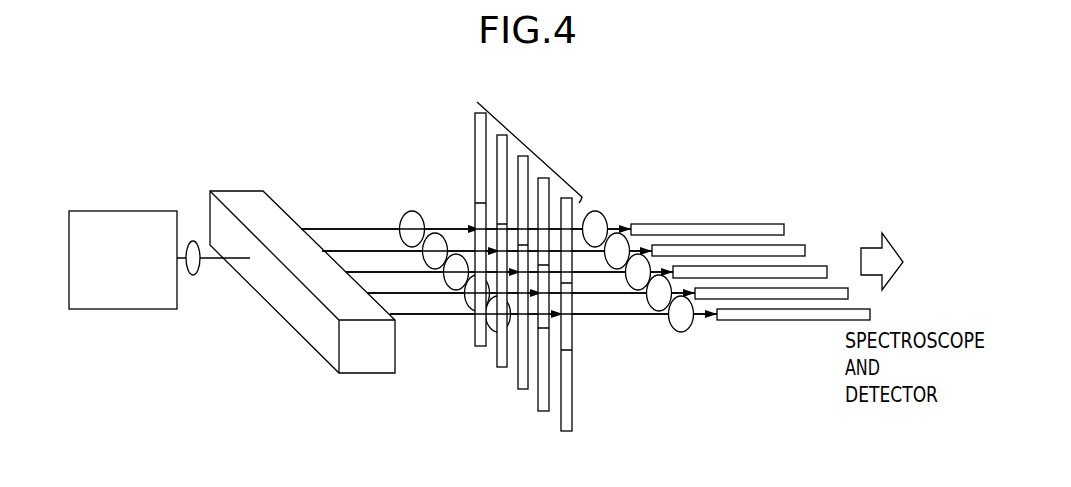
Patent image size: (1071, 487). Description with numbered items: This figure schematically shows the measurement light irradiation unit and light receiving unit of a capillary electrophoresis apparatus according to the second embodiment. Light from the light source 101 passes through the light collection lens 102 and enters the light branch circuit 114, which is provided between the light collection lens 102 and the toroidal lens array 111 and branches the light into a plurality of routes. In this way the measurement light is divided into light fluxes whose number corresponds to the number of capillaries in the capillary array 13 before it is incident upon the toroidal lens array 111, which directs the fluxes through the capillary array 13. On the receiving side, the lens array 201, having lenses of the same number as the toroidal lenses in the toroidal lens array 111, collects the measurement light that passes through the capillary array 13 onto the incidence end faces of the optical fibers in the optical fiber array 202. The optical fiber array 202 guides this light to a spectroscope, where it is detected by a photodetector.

The light source 101 is at (122, 211).
The light collection lens 102 is at (196, 276).
The light branch circuit 114 is at (240, 190).
The toroidal lens array 111 is at (431, 193).
The capillary array 13 is at (531, 151).
The lens array 201 is at (676, 342).
The optical fiber array 202 is at (742, 228).